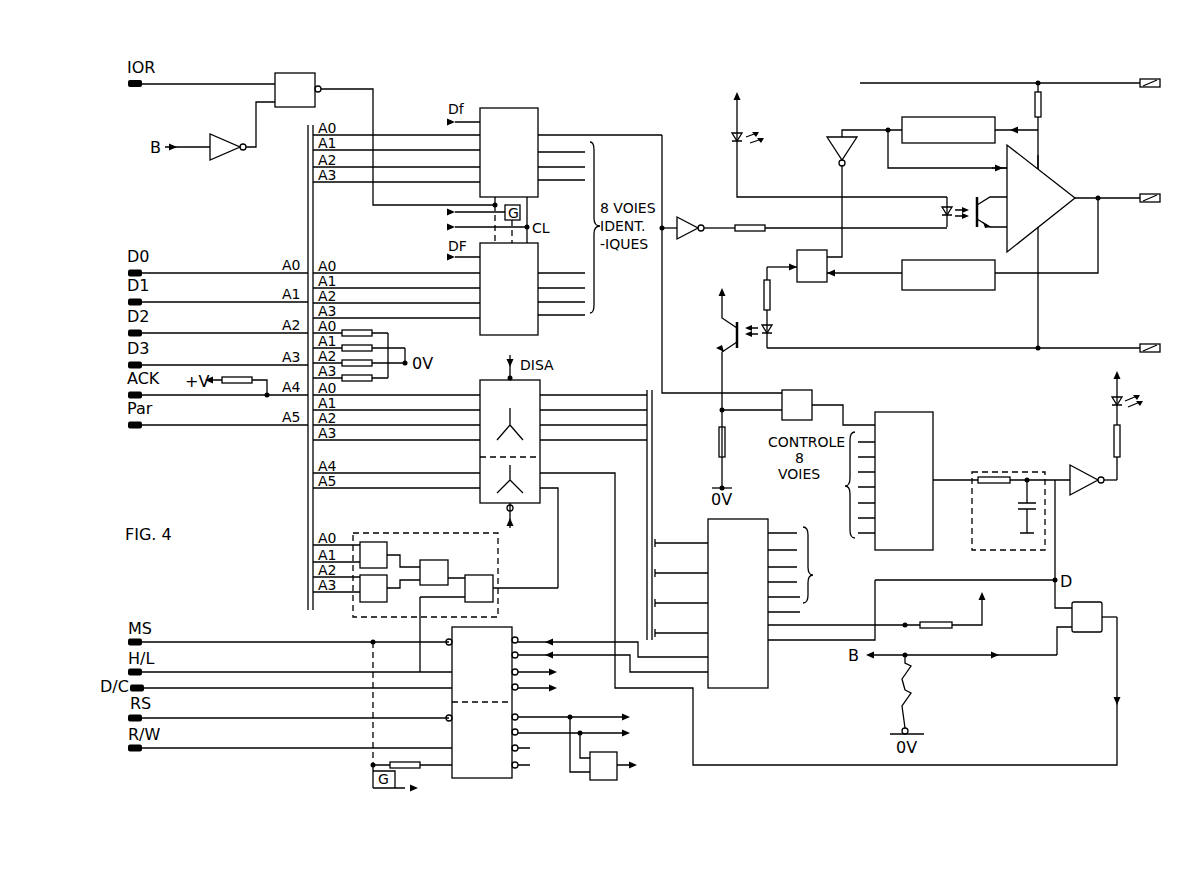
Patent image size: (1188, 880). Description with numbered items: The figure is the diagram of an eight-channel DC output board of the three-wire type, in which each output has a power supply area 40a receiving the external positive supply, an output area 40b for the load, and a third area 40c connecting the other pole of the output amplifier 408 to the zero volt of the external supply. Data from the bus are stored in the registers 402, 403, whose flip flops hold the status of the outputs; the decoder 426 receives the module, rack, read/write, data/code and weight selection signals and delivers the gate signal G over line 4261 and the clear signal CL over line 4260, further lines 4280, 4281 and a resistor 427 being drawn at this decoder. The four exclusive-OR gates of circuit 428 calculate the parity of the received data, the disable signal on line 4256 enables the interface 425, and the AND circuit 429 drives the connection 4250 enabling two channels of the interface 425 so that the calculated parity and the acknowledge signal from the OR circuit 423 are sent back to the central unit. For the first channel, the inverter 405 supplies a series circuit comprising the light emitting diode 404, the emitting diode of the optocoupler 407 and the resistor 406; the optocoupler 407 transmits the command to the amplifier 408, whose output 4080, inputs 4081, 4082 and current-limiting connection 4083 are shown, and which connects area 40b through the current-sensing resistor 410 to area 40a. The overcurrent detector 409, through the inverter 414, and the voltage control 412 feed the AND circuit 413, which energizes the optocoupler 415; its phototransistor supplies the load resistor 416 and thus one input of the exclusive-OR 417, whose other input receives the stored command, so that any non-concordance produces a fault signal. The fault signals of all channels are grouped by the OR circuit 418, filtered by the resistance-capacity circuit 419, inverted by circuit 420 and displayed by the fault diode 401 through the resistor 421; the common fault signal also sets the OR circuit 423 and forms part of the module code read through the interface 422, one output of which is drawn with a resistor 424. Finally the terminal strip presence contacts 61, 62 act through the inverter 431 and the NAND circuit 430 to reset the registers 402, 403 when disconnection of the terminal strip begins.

The NAND circuit 430 is at (306, 73).
The inverter 431 is at (227, 158).
The register 402 is at (528, 110).
The register 403 is at (548, 257).
The register 402 clock signal 4280 is at (498, 397).
The register 403 clock signal 4281 is at (498, 472).
The line 4261 is at (439, 502).
The line 4260 is at (535, 472).
The line 4256 is at (581, 540).
The interface 425 is at (542, 382).
The output 4250 is at (593, 638).
The exclusive-OR circuit 428 is at (436, 536).
The decoder 426 is at (505, 627).
The resistor 427 is at (376, 765).
The AND circuit 429 is at (608, 781).
The light emitting diode 404 is at (731, 137).
The inverter 405 is at (687, 218).
The resistor 406 is at (766, 224).
The optocoupler 407 is at (973, 202).
The output amplifier 408 is at (1041, 198).
The amplifier output 4080 is at (1078, 197).
The amplifier input 4081 is at (1043, 163).
The amplifier input 4082 is at (1040, 239).
The connection 4083 is at (1000, 167).
The overcurrent detector 409 is at (987, 118).
The resistor 410 is at (1045, 115).
The voltage control 412 is at (965, 258).
The AND circuit 413 is at (809, 283).
The inverter 414 is at (831, 152).
The optocoupler 415 is at (734, 341).
The load resistor 416 is at (728, 440).
The exclusive-OR circuit 417 is at (810, 398).
The OR circuit 418 is at (935, 421).
The resistance-capacity circuit 419 is at (1020, 470).
The inverter 420 is at (1086, 496).
The resistor 421 is at (1113, 433).
The interface 422 is at (750, 519).
The OR circuit 423 is at (1088, 603).
The resistor 424 is at (952, 622).
The fault display light emitting diode 401 is at (1110, 402).
The power supply area 40a is at (1012, 72).
The output area 40b is at (1150, 185).
The third area 40c is at (965, 337).
The terminal strip presence contact 62 is at (922, 672).
The terminal strip presence contact 61 is at (922, 709).